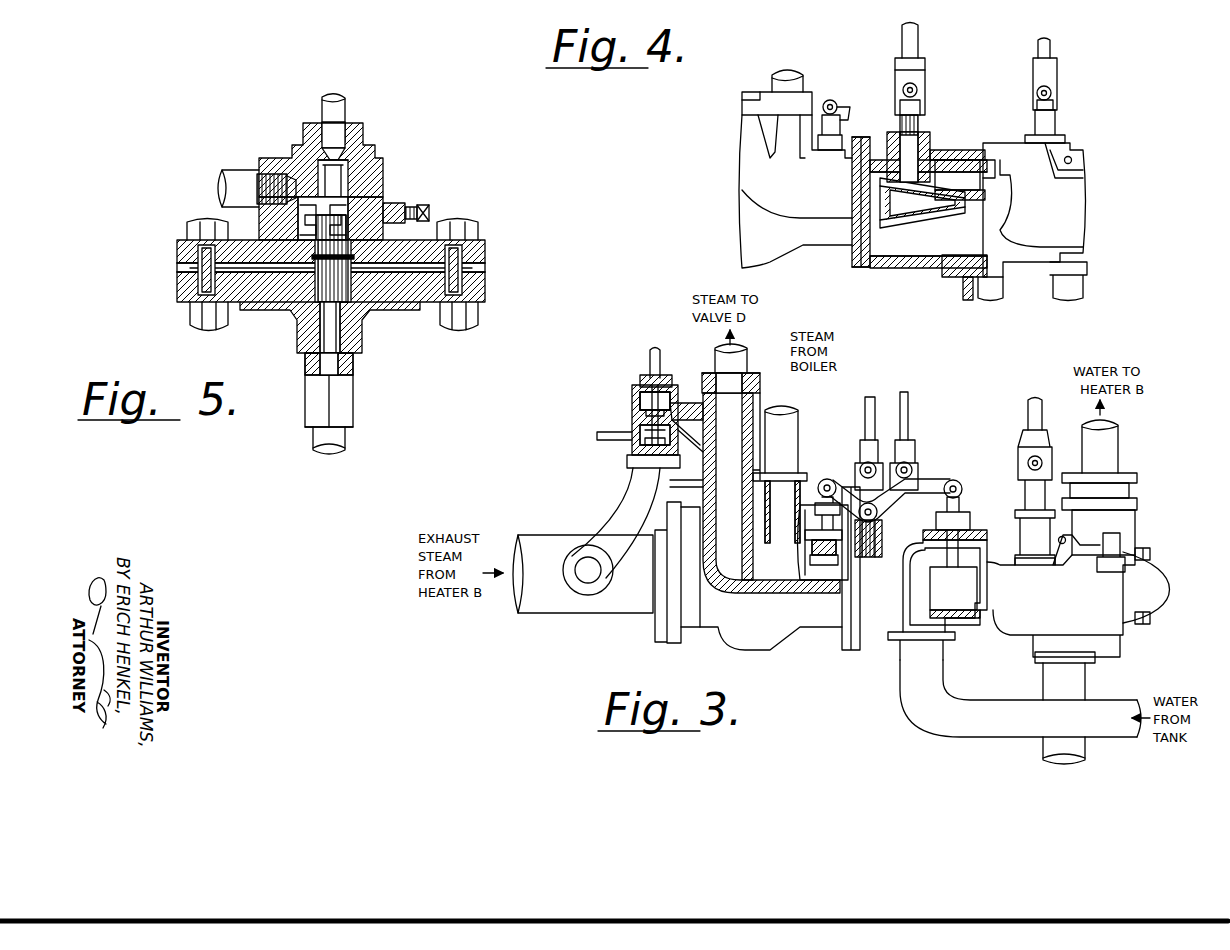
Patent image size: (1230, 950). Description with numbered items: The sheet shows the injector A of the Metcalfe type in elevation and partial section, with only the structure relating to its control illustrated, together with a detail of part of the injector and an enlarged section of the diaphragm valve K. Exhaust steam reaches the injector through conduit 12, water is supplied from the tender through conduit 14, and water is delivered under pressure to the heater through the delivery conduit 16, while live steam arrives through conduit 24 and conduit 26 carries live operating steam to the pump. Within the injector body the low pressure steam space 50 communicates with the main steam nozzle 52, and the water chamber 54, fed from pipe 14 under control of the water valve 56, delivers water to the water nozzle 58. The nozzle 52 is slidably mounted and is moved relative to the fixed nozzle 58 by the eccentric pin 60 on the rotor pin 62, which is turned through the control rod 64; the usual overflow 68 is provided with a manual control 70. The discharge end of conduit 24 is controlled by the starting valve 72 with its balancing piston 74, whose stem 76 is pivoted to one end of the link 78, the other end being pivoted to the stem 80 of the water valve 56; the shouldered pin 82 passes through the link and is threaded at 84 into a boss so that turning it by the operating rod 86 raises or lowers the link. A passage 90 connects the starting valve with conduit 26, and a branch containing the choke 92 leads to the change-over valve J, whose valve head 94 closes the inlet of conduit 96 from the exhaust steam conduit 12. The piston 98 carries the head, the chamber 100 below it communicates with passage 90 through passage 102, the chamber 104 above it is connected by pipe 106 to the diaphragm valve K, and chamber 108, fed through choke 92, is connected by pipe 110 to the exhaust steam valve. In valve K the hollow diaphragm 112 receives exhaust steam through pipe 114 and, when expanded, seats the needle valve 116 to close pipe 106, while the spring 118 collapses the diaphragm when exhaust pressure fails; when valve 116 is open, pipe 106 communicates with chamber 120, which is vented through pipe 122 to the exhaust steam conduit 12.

In FIG. 3, the conduit 12 is at (545, 608).
In FIG. 3, the conduit 14 is at (960, 727).
In FIG. 3, the delivery conduit 16 is at (1112, 438).
In FIG. 4, the conduit 24 is at (782, 78).
In FIG. 3, the conduit 24 is at (795, 430).
In FIG. 3, the conduit 26 is at (738, 362).
In FIG. 4, the low pressure steam space 50 is at (850, 240).
In FIG. 4, the main steam nozzle 52 is at (915, 236).
In FIG. 4, the water chamber 54 is at (950, 160).
In FIG. 3, the water valve 56 is at (965, 570).
In FIG. 4, the water nozzle 58 is at (975, 210).
In FIG. 4, the eccentric pin 60 is at (890, 148).
In FIG. 4, the rotor pin 62 is at (920, 120).
In FIG. 4, the control rod 64 is at (915, 42).
In FIG. 3, the overflow 68 is at (1080, 682).
In FIG. 3, the manual control 70 is at (1040, 412).
In FIG. 3, the starting valve 72 is at (826, 566).
In FIG. 3, the balancing piston 74 is at (812, 540).
In FIG. 4, the stem 76 is at (824, 108).
In FIG. 3, the stem 76 is at (818, 482).
In FIG. 4, the link 78 is at (847, 105).
In FIG. 3, the link 78 is at (920, 488).
In FIG. 3, the stem 80 is at (962, 495).
In FIG. 3, the shouldered pin 82 is at (860, 465).
In FIG. 3, the threaded portion 84 is at (870, 557).
In FIG. 3, the operating rod 86 is at (868, 400).
In FIG. 3, the passage 90 is at (740, 543).
In FIG. 3, the choke 92 is at (703, 415).
In FIG. 3, the valve head 94 is at (648, 462).
In FIG. 3, the conduit 96 is at (630, 514).
In FIG. 3, the piston 98 is at (640, 398).
In FIG. 3, the chamber 100 is at (640, 413).
In FIG. 3, the passage 102 is at (750, 410).
In FIG. 3, the chamber 104 is at (662, 380).
In FIG. 5, the pipe 106 is at (340, 104).
In FIG. 3, the pipe 106 is at (652, 355).
In FIG. 3, the chamber 108 is at (636, 445).
In FIG. 3, the pipe 110 is at (600, 438).
In FIG. 5, the hollow diaphragm 112 is at (392, 280).
In FIG. 5, the pipe 114 is at (340, 438).
In FIG. 5, the needle valve 116 is at (372, 194).
In FIG. 5, the spring 118 is at (316, 232).
In FIG. 5, the chamber 120 is at (378, 178).
In FIG. 5, the pipe 122 is at (238, 180).
In FIG. 3, the injector A is at (790, 637).
In FIG. 3, the change-over valve J is at (630, 378).
In FIG. 5, the diaphragm valve K is at (384, 150).